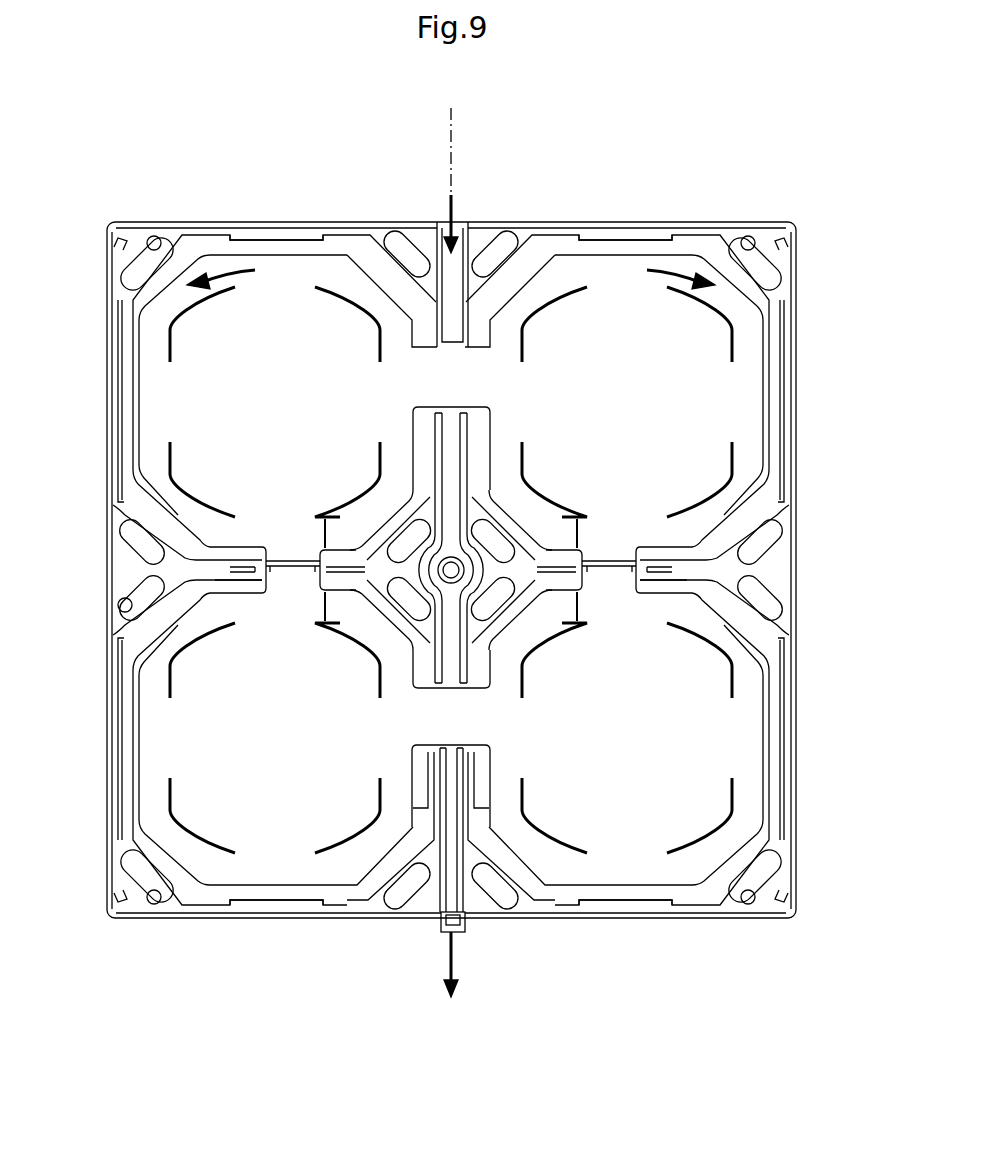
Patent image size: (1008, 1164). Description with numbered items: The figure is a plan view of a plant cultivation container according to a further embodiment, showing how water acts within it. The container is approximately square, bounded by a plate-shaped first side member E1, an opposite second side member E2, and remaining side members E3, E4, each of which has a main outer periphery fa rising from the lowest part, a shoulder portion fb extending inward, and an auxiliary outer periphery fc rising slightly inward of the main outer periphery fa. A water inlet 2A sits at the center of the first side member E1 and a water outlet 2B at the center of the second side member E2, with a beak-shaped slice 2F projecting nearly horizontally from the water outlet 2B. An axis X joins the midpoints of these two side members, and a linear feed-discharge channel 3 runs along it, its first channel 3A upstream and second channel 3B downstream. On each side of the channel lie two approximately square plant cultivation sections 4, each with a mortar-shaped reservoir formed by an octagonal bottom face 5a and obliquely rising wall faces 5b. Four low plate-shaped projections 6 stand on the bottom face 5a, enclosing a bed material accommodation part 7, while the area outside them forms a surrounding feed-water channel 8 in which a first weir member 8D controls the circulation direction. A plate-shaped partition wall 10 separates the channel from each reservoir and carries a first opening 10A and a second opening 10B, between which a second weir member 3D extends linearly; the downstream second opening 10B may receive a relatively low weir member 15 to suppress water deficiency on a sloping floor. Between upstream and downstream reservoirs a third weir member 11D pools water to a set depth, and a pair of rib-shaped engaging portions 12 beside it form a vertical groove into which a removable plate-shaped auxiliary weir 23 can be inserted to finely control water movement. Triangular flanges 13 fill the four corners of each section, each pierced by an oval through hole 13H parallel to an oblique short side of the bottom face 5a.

The axis X is at (450, 136).
The water inlet 2A is at (456, 245).
The water outlet 2B is at (460, 936).
The beak-shaped slice 2F is at (440, 923).
The feed-discharge channel 3 is at (456, 567).
The first channel 3A is at (456, 298).
The second channel 3B is at (456, 790).
The second weir member 3D is at (448, 520).
The plant cultivation section 4 is at (660, 219).
The bottom face 5a is at (623, 300).
The wall face 5b is at (322, 236).
The plate-shaped projection 6 is at (697, 312).
The bed material accommodation part 7 is at (251, 421).
The surrounding feed-water channel 8 is at (140, 354).
The first weir member 8D is at (357, 506).
The partition wall 10 is at (425, 440).
The first opening 10A is at (408, 392).
The second opening 10B is at (482, 693).
The third weir member 11D is at (266, 546).
The engaging portion 12 is at (312, 576).
The flange 13 is at (116, 252).
The through hole 13H is at (154, 236).
The weir member 15 is at (455, 744).
The auxiliary weir 23 is at (292, 560).
The first side member E1 is at (224, 219).
The second side member E2 is at (540, 922).
The side member E3 is at (803, 521).
The side member E4 is at (104, 539).
The main outer periphery fa is at (735, 232).
The shoulder portion fb is at (536, 228).
The auxiliary outer periphery fc is at (305, 233).